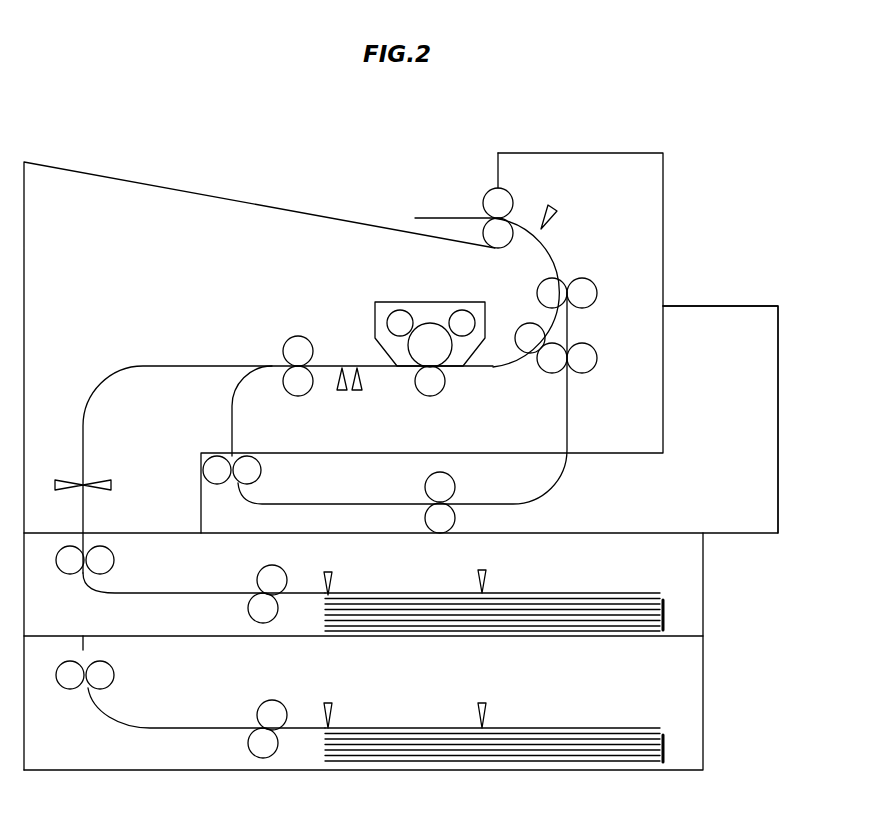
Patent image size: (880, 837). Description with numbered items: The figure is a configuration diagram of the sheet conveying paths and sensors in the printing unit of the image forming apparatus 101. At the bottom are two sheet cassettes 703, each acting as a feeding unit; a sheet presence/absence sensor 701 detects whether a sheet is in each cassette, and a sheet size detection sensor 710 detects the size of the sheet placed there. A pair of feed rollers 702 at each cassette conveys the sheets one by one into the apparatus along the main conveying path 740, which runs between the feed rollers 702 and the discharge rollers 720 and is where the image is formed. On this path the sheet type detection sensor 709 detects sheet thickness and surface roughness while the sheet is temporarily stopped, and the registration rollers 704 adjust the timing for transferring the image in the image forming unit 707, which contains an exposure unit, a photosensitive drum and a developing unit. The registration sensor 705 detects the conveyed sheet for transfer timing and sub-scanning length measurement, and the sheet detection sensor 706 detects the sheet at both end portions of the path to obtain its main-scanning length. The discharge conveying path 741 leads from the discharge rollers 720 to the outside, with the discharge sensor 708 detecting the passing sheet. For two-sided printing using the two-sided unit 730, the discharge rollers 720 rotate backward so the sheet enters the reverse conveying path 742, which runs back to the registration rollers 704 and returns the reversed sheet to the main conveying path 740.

The image forming apparatus 101 is at (120, 179).
The sheet presence/absence sensor 701 is at (490, 576).
The feed rollers 702 is at (282, 568).
The sheet cassette 703 is at (665, 610).
The registration rollers 704 is at (298, 336).
The registration sensor 705 is at (342, 394).
The sheet detection sensor 706 is at (357, 394).
The image forming unit 707 is at (432, 302).
The discharge sensor 708 is at (556, 206).
The sheet type detection sensor 709 is at (80, 481).
The sheet size detection sensor 710 is at (334, 578).
The discharge rollers 720 is at (584, 278).
The two-sided unit 730 is at (722, 306).
The main conveying path 740 is at (275, 364).
The discharge conveying path 741 is at (546, 242).
The reverse conveying path 742 is at (322, 502).